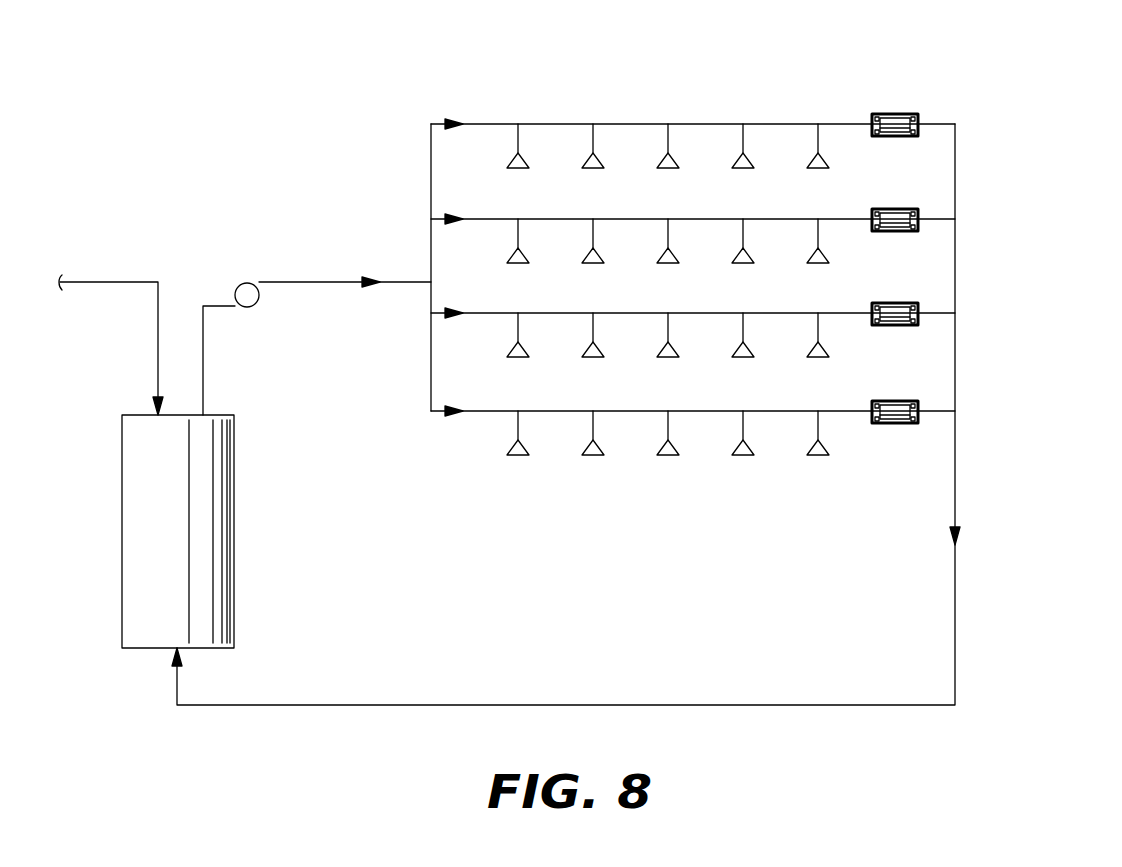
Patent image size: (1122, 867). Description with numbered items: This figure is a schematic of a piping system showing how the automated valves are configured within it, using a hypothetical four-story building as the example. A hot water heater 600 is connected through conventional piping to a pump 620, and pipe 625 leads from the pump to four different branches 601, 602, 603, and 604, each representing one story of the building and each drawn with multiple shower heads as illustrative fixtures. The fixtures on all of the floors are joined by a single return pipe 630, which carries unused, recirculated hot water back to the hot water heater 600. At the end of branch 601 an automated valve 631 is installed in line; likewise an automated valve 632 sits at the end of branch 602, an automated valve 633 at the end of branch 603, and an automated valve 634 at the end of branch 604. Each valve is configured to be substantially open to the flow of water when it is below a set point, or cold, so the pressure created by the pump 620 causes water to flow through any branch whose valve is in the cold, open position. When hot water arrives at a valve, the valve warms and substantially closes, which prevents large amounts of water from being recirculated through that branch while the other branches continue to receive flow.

The hot water heater 600 is at (143, 545).
The branch 601 is at (488, 410).
The branch 602 is at (488, 312).
The branch 603 is at (488, 218).
The branch 604 is at (488, 123).
The pump 620 is at (240, 292).
The pipe 625 is at (300, 282).
The return pipe 630 is at (955, 622).
The automated valve 631 is at (893, 418).
The automated valve 632 is at (893, 320).
The automated valve 633 is at (893, 226).
The automated valve 634 is at (893, 131).